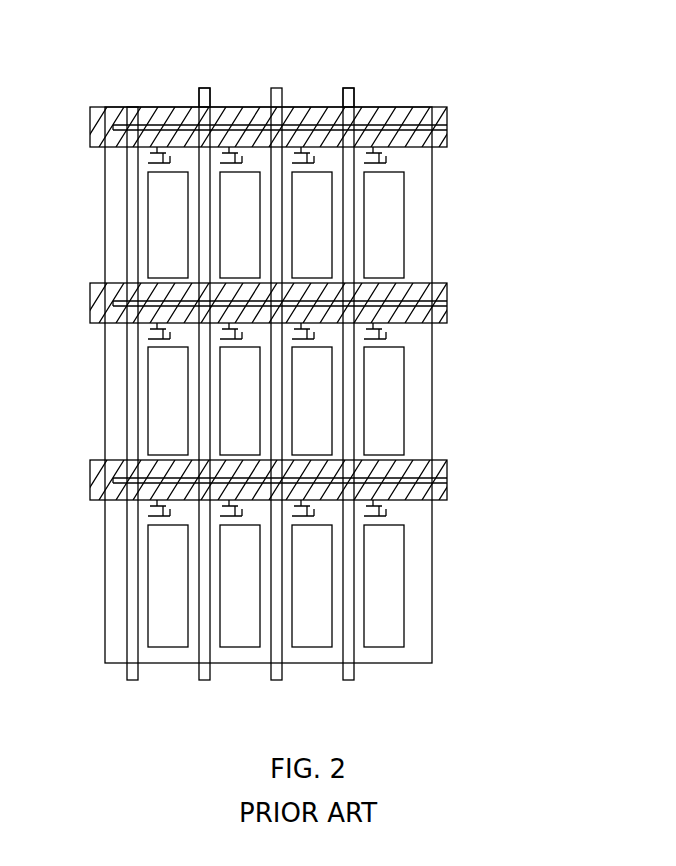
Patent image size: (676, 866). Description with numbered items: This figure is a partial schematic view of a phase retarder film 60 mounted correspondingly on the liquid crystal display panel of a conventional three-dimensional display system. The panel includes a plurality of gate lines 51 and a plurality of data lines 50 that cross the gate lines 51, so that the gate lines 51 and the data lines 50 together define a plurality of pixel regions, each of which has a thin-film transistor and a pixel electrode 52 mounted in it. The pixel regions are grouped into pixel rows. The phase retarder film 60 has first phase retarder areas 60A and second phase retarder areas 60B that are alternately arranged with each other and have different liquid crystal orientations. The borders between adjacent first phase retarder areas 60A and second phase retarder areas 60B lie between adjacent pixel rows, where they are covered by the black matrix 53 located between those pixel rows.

The data line 50 is at (205, 88).
The gate line 51 is at (249, 112).
The pixel electrode 52 is at (130, 188).
The black matrix 53 is at (448, 138).
The phase retarder film 60 is at (488, 302).
The first phase retarder area 60A is at (433, 210).
The second phase retarder area 60B is at (433, 384).